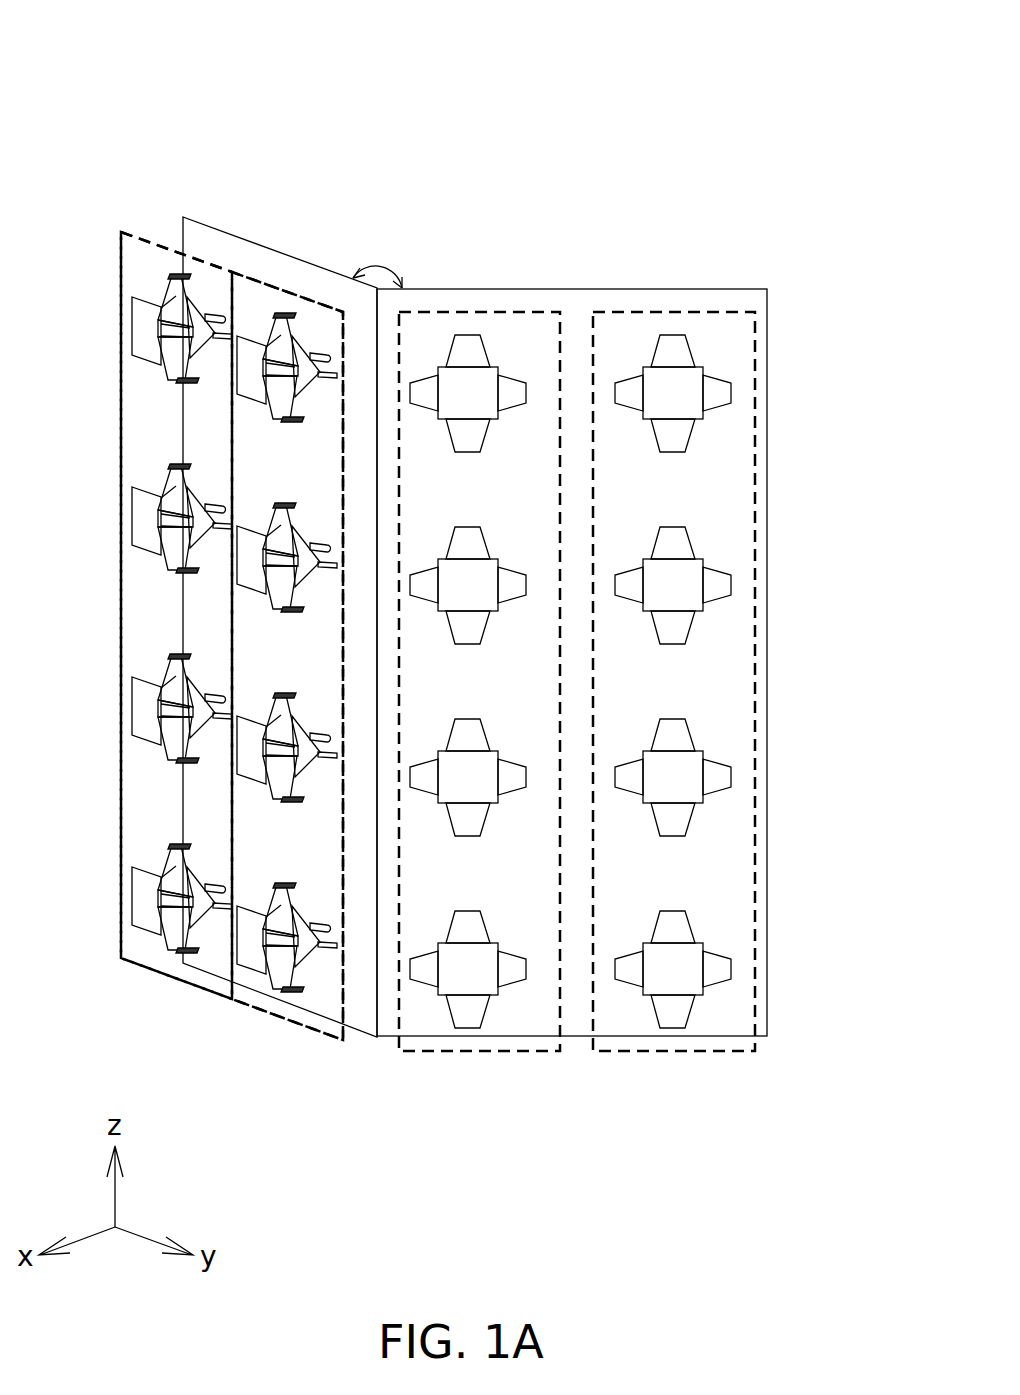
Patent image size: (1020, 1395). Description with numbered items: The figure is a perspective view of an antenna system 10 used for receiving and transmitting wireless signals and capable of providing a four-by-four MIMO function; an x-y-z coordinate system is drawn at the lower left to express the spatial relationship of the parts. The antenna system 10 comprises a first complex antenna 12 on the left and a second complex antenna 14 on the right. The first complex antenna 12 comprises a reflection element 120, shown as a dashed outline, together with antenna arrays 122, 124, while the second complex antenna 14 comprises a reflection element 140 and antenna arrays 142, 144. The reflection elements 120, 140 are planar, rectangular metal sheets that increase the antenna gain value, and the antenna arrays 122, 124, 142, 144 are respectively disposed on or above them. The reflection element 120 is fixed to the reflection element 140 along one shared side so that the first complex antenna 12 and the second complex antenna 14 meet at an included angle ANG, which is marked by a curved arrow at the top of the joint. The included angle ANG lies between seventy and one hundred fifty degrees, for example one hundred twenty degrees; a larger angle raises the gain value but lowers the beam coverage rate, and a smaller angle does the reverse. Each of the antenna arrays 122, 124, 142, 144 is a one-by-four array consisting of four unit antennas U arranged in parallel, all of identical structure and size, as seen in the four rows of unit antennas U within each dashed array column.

The antenna system 10 is at (715, 92).
The first complex antenna 12 is at (250, 618).
The second complex antenna 14 is at (767, 262).
The reflection element 120 is at (193, 238).
The antenna array 122 is at (153, 972).
The antenna array 124 is at (292, 1025).
The reflection element 140 is at (727, 327).
The antenna array 142 is at (478, 1053).
The antenna array 144 is at (673, 1053).
The included angle ANG is at (411, 269).
The unit antenna U is at (248, 930).